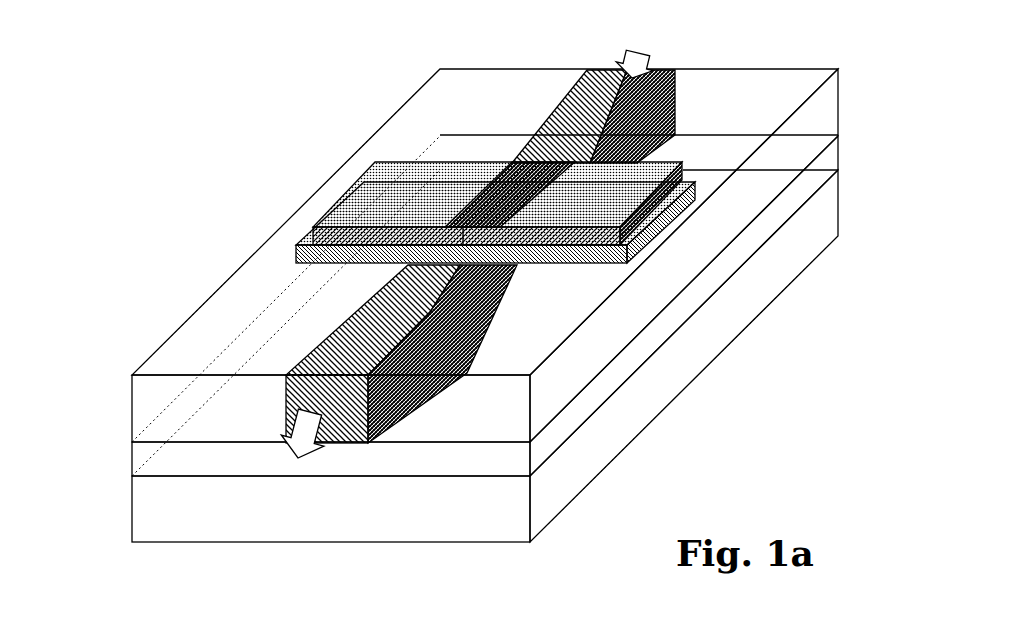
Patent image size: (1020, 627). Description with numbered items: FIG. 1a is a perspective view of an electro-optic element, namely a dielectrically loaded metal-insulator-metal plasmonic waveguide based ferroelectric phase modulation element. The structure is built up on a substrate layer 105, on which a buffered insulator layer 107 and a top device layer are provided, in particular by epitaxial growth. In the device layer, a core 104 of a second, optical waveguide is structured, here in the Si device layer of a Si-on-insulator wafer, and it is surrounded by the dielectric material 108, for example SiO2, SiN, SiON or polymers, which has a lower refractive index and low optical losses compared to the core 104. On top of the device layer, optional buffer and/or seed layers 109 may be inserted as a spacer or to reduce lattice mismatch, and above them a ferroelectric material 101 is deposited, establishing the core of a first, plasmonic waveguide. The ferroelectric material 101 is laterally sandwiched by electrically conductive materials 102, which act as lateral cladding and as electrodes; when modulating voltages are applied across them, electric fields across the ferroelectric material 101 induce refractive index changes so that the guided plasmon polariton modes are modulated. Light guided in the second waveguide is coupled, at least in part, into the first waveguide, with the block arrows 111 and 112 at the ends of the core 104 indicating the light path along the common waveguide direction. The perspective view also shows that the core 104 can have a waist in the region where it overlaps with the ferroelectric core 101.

The ferroelectric material 101 is at (508, 173).
The electrically conductive materials 102 is at (358, 195).
The core 104 is at (470, 316).
The substrate layer 105 is at (155, 523).
The buffered insulator layer 107 is at (155, 453).
The dielectric material 108 is at (157, 402).
The buffer or seed layers 109 is at (305, 250).
The output light 111 is at (308, 443).
The input light 112 is at (637, 70).